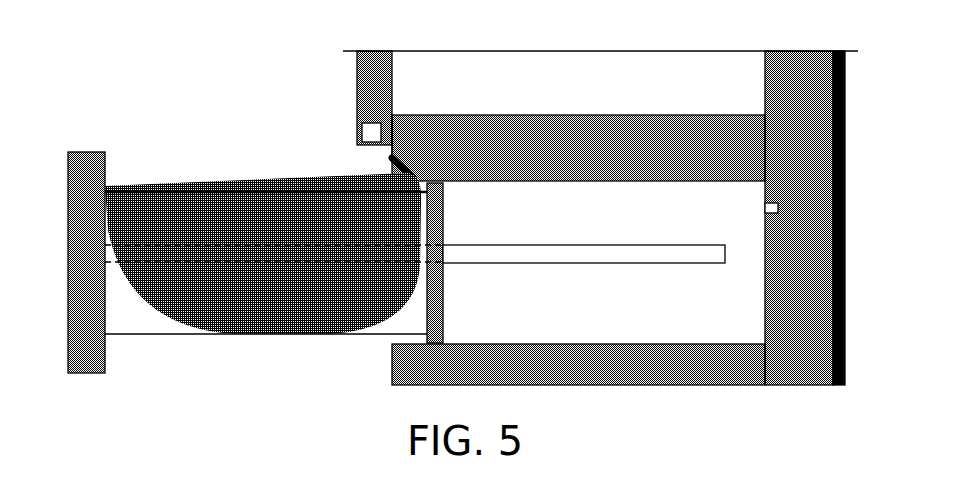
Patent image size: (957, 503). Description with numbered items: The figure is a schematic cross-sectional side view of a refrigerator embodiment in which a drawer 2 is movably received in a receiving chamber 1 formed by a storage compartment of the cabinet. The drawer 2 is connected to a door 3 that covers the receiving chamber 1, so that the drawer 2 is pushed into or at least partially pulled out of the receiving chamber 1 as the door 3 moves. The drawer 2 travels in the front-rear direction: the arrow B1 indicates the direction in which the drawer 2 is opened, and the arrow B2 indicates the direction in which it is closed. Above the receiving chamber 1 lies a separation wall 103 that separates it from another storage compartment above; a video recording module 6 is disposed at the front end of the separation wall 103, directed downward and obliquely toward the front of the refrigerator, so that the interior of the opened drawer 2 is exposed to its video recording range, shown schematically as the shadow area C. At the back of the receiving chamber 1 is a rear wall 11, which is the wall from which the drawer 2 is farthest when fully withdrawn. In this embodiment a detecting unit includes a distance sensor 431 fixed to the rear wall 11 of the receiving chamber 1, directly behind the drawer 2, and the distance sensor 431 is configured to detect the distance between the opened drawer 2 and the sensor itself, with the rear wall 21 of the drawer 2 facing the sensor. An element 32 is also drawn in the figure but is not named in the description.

The receiving chamber 1 is at (616, 218).
The drawer 2 is at (178, 329).
The door 3 is at (80, 198).
The video recording module 6 is at (413, 170).
The rear wall 11 is at (808, 246).
The rear wall 21 is at (443, 317).
The shaft 32 is at (510, 245).
The separation wall 103 is at (607, 124).
The distance sensor 431 is at (778, 203).
The shadow area C is at (270, 185).
The arrow B1 is at (148, 95).
The arrow B2 is at (150, 127).